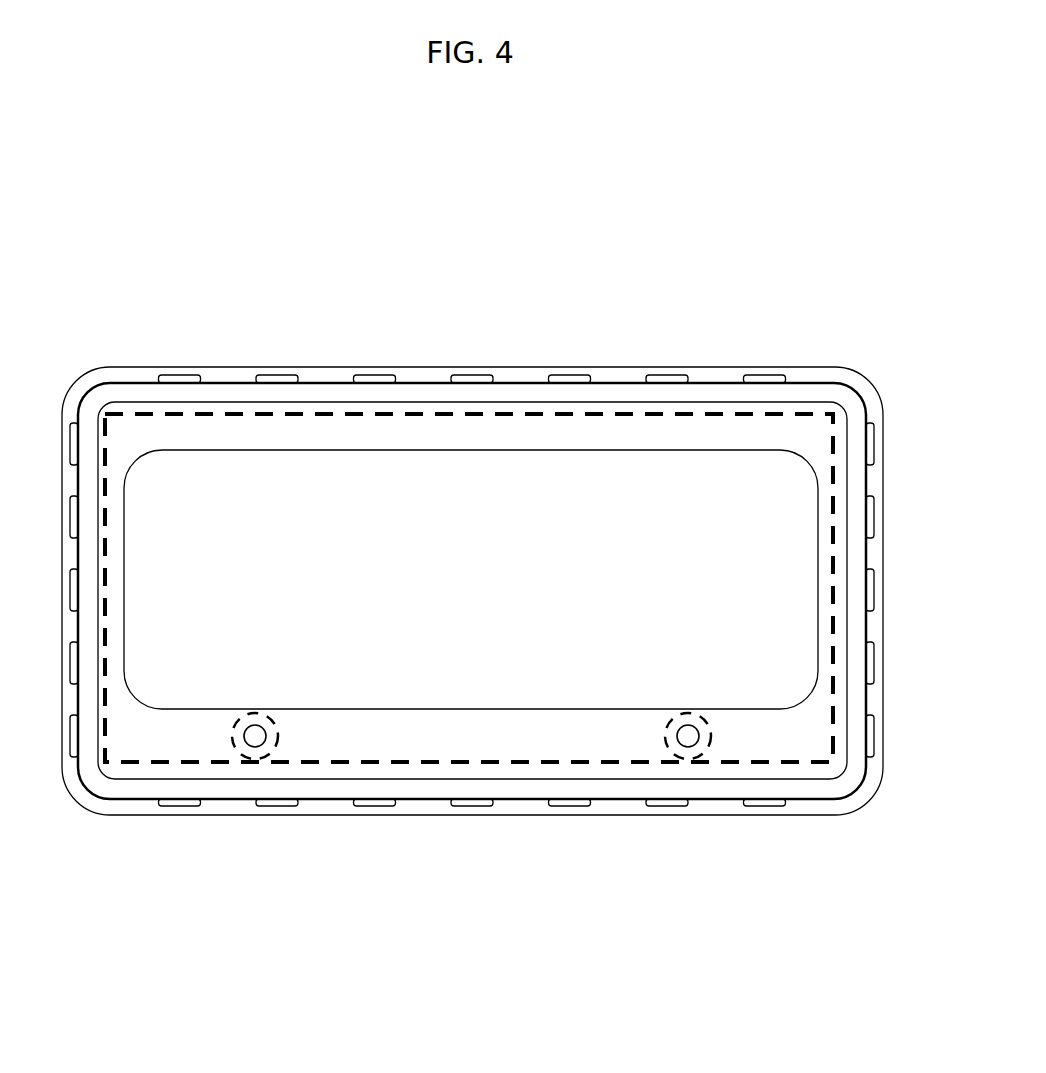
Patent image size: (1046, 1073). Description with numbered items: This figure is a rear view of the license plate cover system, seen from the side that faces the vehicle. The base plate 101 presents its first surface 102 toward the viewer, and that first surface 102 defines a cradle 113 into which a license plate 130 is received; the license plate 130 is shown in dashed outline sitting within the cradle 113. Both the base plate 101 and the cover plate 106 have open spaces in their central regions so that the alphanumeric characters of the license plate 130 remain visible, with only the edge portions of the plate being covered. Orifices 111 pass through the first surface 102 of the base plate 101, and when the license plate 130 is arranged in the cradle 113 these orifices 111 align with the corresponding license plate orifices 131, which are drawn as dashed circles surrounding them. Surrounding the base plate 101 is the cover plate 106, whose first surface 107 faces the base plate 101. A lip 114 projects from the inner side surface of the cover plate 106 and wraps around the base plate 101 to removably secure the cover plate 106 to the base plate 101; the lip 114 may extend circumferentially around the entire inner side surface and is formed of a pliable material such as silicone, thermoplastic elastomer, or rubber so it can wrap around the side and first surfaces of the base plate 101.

The base plate 101 is at (141, 750).
The first surface 102 is at (447, 737).
The cover plate 106 is at (226, 826).
The first surface 107 is at (864, 788).
The orifices 111 is at (267, 726).
The cradle 113 is at (832, 390).
The lip 114 is at (839, 782).
The license plate 130 is at (145, 414).
The license plate orifices 131 is at (222, 710).